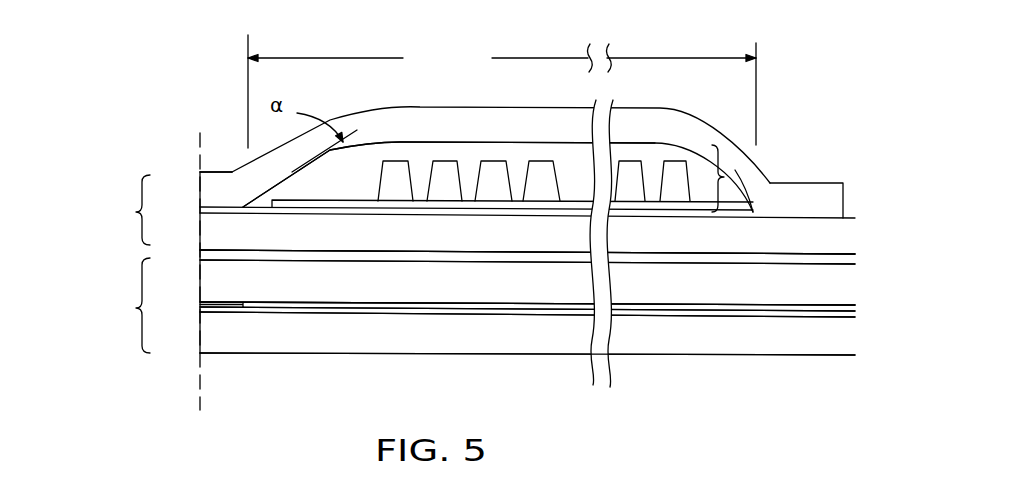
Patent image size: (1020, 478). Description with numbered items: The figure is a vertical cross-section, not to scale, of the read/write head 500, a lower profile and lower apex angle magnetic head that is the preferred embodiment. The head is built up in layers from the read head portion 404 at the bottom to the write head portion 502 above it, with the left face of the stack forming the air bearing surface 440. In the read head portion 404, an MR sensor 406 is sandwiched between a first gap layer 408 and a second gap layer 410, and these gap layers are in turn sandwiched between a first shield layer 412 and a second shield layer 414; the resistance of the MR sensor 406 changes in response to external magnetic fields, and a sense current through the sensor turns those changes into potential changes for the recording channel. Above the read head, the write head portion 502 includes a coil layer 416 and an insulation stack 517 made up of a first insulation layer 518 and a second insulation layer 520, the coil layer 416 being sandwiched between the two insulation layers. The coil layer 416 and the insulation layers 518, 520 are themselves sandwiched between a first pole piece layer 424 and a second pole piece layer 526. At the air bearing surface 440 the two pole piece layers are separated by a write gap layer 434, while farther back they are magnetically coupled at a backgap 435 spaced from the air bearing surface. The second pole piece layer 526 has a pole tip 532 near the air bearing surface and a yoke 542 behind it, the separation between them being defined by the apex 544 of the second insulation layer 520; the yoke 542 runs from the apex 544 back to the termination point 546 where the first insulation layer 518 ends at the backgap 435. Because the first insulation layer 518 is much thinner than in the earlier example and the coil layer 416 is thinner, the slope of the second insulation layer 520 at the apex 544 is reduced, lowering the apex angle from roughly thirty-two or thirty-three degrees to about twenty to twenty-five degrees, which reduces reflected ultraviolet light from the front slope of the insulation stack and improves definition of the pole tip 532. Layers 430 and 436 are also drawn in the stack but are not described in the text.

The read/write head 500 is at (682, 372).
The yoke 542 is at (502, 91).
The second pole piece layer 526 is at (468, 136).
The insulation stack 517 is at (733, 167).
The backgap 435 is at (802, 183).
The apex 544 is at (243, 204).
The second insulation layer 520 is at (370, 193).
The coil layer 416 is at (503, 195).
The termination point 546 is at (753, 210).
The pole tip 532 is at (200, 187).
The write gap layer 434 is at (200, 212).
The first pole piece layer 430 is at (200, 235).
The insulation layer 436 is at (200, 256).
The MR sensor 406 is at (200, 307).
The write head portion 502 is at (128, 212).
The read head portion 404 is at (129, 308).
The first insulation layer 518 is at (268, 243).
The first pole piece layer 424 is at (342, 242).
The second shield layer 414 is at (462, 295).
The second gap layer 410 is at (505, 305).
The first gap layer 408 is at (507, 315).
The first shield layer 412 is at (470, 347).
The ABS 440 is at (197, 388).